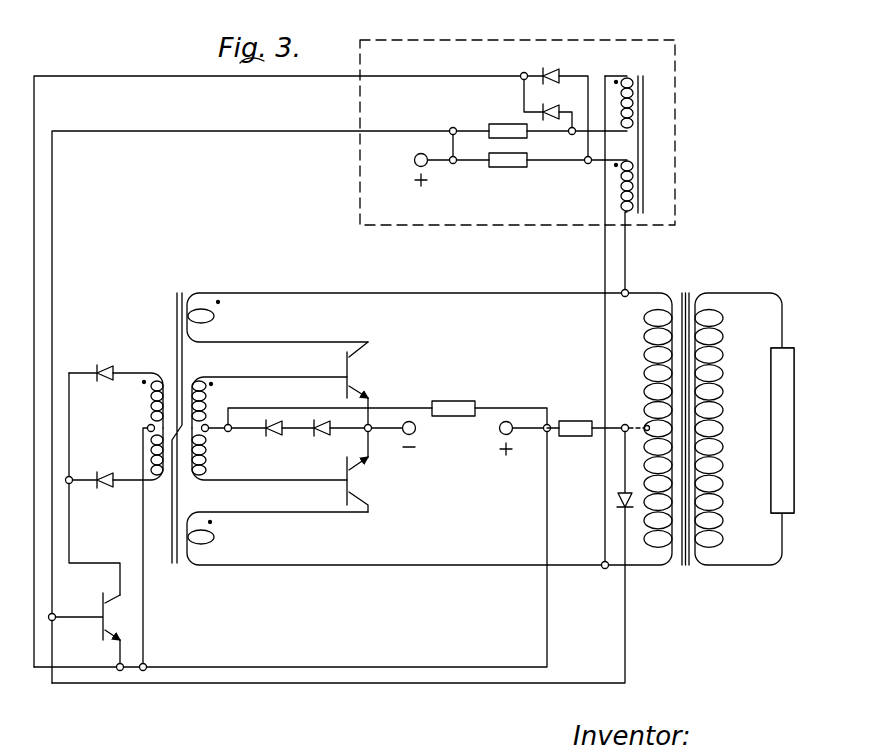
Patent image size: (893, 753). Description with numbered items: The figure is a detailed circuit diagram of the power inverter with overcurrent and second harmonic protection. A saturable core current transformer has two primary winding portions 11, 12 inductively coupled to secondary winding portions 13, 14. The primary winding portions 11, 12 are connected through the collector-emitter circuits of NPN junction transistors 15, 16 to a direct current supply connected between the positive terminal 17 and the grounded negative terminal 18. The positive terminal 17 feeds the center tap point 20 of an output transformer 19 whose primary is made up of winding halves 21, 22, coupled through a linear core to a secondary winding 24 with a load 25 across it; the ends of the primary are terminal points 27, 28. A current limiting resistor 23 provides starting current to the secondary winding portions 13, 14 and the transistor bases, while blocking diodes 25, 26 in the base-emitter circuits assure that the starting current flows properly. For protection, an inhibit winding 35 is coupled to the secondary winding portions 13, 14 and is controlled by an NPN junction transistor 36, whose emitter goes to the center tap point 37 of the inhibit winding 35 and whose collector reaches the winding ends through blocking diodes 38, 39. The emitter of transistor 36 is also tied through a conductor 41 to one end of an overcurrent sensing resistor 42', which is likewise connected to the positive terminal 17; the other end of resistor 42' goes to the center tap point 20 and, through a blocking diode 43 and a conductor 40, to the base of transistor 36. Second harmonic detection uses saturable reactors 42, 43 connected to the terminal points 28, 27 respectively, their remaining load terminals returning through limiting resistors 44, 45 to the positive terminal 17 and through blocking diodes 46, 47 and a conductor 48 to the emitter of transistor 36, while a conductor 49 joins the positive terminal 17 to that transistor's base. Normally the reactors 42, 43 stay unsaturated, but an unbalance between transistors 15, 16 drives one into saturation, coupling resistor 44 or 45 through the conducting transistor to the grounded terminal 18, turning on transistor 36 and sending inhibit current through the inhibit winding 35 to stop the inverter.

The primary winding portion 11 is at (215, 316).
The primary winding portion 12 is at (215, 537).
The secondary winding portion 13 is at (208, 401).
The secondary winding portion 14 is at (210, 458).
The NPN junction transistor 15 is at (346, 362).
The NPN junction transistor 16 is at (346, 498).
The positive terminal 17 is at (414, 160).
The grounded negative terminal 18 is at (416, 430).
The output transformer 19 is at (699, 292).
The center tap point 20 is at (632, 413).
The primary winding half 21 is at (646, 343).
The primary winding half 22 is at (648, 534).
The current limiting resistor 23 is at (455, 401).
The secondary winding 24 is at (725, 374).
The blocking diode / load 25 is at (274, 437).
The blocking diode 26 is at (321, 437).
The terminal point 27 is at (630, 291).
The terminal point 28 is at (605, 569).
The inhibit winding 35 is at (151, 391).
The NPN junction transistor 36 is at (101, 605).
The center tap point 37 is at (149, 427).
The blocking diode 38 is at (112, 357).
The blocking diode 39 is at (110, 472).
The conductor 40 is at (327, 688).
The conductor 41 is at (329, 667).
The saturable reactor 42 is at (630, 131).
The overcurrent sensing resistor 42' is at (586, 413).
The saturable reactor / blocking diode 43 is at (621, 200).
The limiting resistor 44 is at (503, 125).
The limiting resistor 45 is at (509, 169).
The blocking diode 46 is at (556, 109).
The blocking diode 47 is at (553, 71).
The conductor 48 is at (109, 75).
The conductor 49 is at (136, 131).